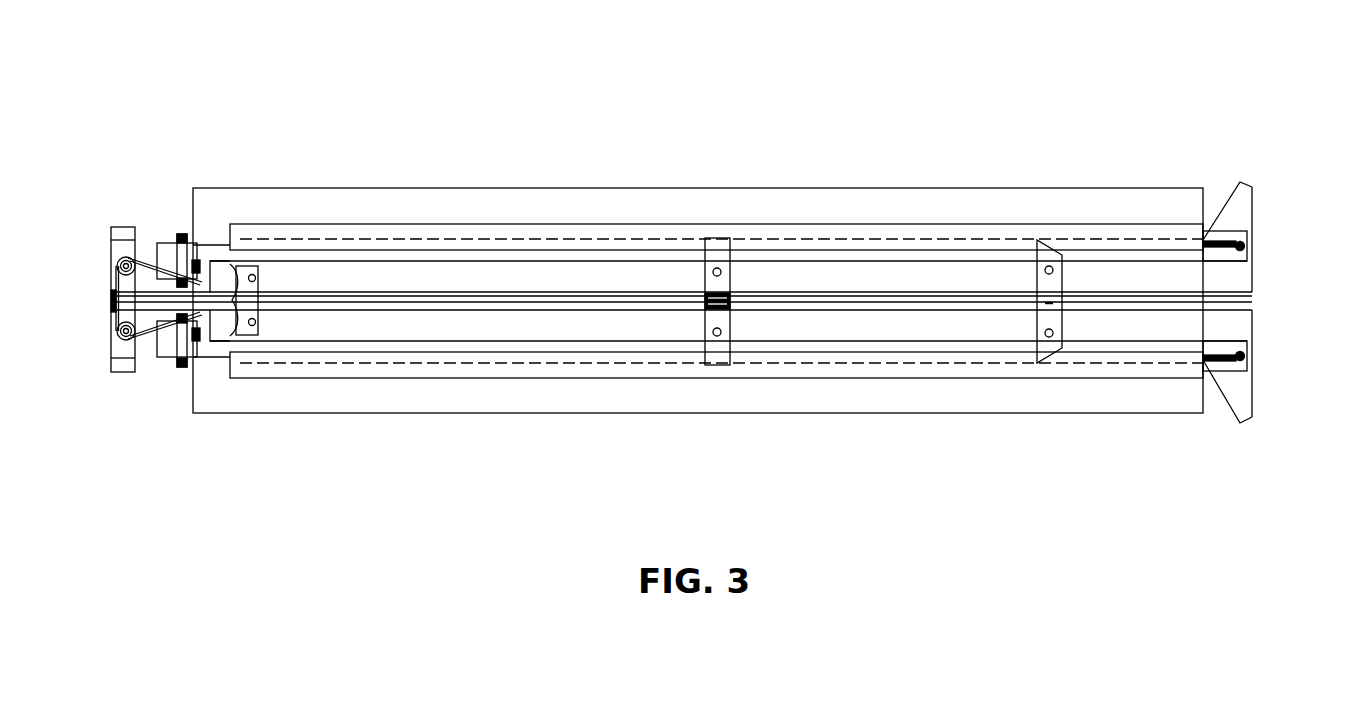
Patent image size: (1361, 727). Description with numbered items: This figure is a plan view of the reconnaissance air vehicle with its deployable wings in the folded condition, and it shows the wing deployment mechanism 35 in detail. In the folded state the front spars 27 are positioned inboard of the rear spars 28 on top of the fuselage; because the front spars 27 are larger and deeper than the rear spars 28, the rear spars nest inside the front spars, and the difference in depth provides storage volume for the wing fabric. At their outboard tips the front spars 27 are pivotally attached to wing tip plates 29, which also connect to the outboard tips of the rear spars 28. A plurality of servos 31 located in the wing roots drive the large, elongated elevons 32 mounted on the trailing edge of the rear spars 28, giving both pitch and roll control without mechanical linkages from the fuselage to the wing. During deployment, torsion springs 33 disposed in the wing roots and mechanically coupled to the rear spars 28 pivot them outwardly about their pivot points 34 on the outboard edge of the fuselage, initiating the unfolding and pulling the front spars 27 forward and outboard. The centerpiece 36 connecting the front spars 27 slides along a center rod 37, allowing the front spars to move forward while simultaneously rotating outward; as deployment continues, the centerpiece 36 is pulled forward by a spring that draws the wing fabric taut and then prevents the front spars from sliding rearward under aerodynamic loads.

The front spars 27 is at (1238, 282).
The rear spars 28 is at (865, 237).
The wing tip plates 29 is at (1253, 243).
The servos 31 is at (172, 246).
The elevons 32 is at (590, 205).
The torsion springs 33 is at (140, 262).
The pivot points 34 is at (116, 262).
The wing deployment mechanism 35 is at (278, 158).
The centerpiece 36 is at (252, 326).
The center rod 37 is at (603, 300).